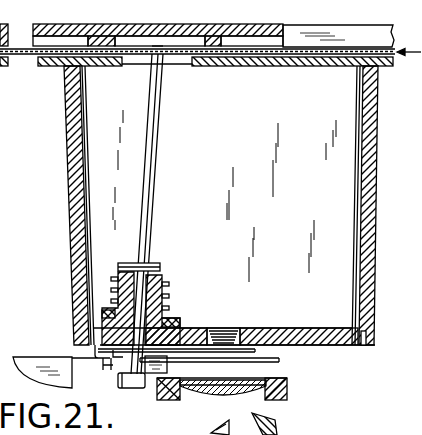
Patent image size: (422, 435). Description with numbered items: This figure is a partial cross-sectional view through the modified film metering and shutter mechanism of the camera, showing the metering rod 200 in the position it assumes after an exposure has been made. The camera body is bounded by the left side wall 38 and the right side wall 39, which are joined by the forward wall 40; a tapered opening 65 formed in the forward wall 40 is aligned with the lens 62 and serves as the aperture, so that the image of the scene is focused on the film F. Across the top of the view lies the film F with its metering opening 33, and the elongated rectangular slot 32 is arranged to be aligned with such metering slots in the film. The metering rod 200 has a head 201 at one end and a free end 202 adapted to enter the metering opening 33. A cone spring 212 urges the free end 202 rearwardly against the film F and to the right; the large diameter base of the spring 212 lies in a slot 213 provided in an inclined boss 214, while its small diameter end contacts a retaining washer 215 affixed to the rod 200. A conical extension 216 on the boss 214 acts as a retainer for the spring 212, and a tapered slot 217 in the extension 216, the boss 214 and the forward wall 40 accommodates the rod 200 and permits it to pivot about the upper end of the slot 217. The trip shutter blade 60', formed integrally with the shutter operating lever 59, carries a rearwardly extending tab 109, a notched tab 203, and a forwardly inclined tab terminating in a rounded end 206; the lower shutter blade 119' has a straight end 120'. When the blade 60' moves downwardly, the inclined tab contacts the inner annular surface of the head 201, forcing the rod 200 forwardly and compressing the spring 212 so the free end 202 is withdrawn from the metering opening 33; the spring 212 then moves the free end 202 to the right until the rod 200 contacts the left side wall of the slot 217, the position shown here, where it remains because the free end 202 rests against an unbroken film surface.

The notched tab 203 is at (115, 0).
The free end 202 is at (161, 50).
The straight end 120' is at (290, 26).
The film F is at (355, 48).
The elongated rectangular slot 32 is at (190, 66).
The metering opening 33 is at (261, 66).
The left side wall 38 is at (66, 195).
The right side wall 39 is at (378, 197).
The metering rod 200 is at (158, 162).
The retaining washer 215 is at (154, 266).
The cone spring 212 is at (163, 285).
The conical extension 216 is at (170, 302).
The tapered slot 217 is at (172, 323).
The slot 213 is at (107, 307).
The inclined boss 214 is at (98, 312).
The shutter operating lever 59 is at (40, 357).
The rearwardly extending tab 109 is at (98, 362).
The head 201 is at (133, 388).
The tapered opening 65 is at (239, 329).
The forward wall 40 is at (314, 328).
The lower shutter blade 119' is at (214, 356).
The trip shutter blade 60' is at (232, 374).
The lens 62 is at (258, 397).
The rounded end 206 is at (278, 416).